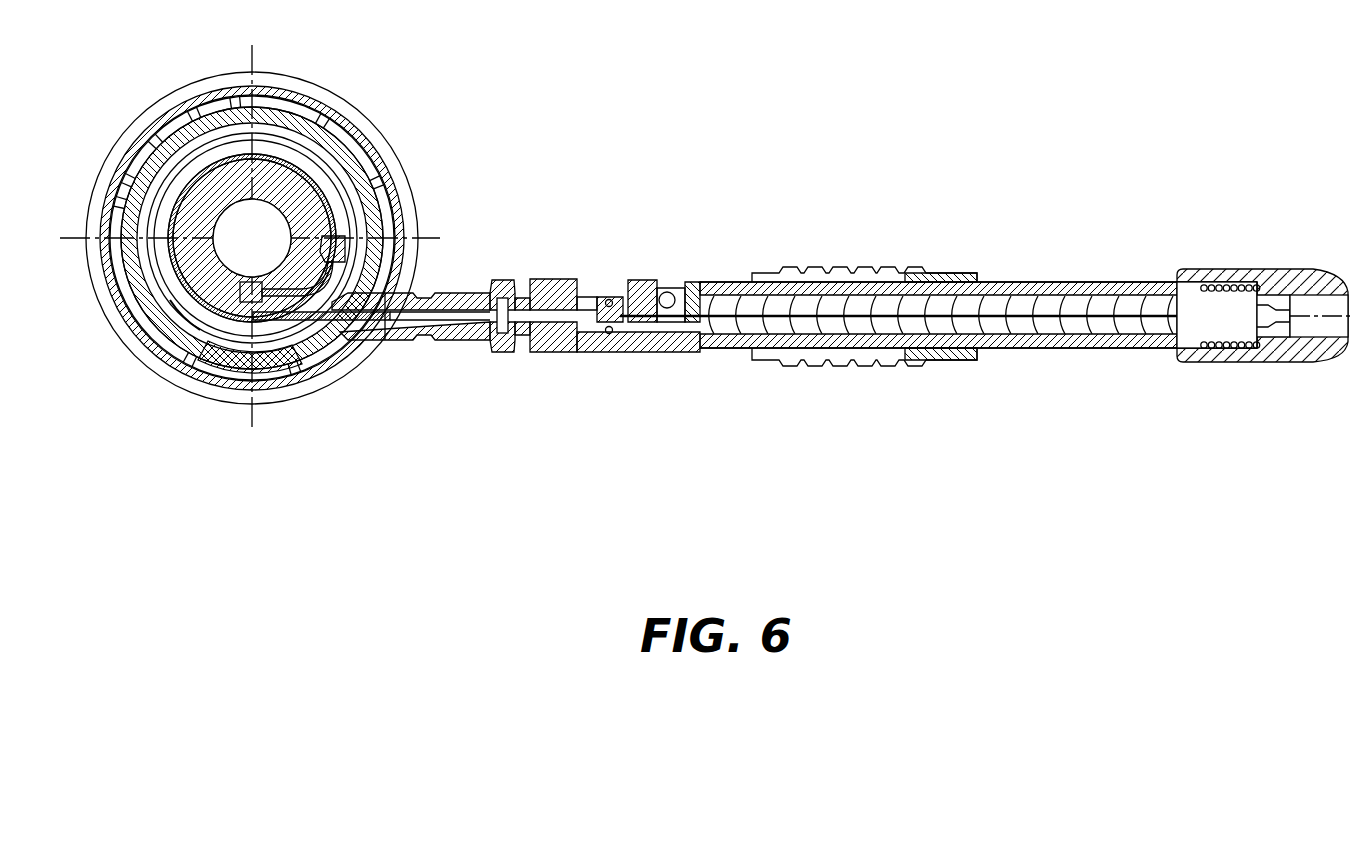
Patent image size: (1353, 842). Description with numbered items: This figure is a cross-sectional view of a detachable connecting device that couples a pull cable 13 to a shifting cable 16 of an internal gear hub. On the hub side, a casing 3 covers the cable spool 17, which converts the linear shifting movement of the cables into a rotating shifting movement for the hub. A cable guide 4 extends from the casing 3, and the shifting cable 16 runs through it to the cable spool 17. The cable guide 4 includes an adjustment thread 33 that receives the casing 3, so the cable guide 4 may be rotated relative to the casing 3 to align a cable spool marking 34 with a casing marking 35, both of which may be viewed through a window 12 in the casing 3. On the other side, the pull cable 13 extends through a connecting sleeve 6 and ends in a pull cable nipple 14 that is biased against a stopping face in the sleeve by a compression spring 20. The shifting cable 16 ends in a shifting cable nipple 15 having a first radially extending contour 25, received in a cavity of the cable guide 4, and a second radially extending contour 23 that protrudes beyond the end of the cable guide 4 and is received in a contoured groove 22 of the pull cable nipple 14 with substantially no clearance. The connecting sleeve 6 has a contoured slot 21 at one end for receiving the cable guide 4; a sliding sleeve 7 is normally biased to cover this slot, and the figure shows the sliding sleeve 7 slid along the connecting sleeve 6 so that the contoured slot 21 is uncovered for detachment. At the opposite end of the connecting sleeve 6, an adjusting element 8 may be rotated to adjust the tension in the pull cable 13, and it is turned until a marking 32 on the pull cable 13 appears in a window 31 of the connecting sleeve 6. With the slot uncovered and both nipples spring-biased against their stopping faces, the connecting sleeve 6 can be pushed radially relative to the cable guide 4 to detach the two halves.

The casing 3 is at (272, 388).
The cable guide 4 is at (452, 292).
The connecting sleeve 6 is at (1104, 349).
The sliding sleeve 7 is at (888, 268).
The adjusting element 8 is at (1215, 268).
The window 12 is at (145, 292).
The pull cable 13 is at (1322, 323).
The pull cable nipple 14 is at (682, 349).
The shifting cable nipple 15 is at (585, 333).
The shifting cable 16 is at (295, 321).
The cable spool 17 is at (330, 207).
The compression spring 20 is at (978, 336).
The contoured slot 21 is at (590, 292).
The contoured groove 22 is at (612, 334).
The second radially extending contour 23 is at (614, 334).
The first radially extending contour 25 is at (545, 341).
The window 31 is at (660, 283).
The marking 32 is at (700, 286).
The adjustment thread 33 is at (440, 341).
The cable spool marking 34 is at (185, 296).
The casing marking 35 is at (177, 335).